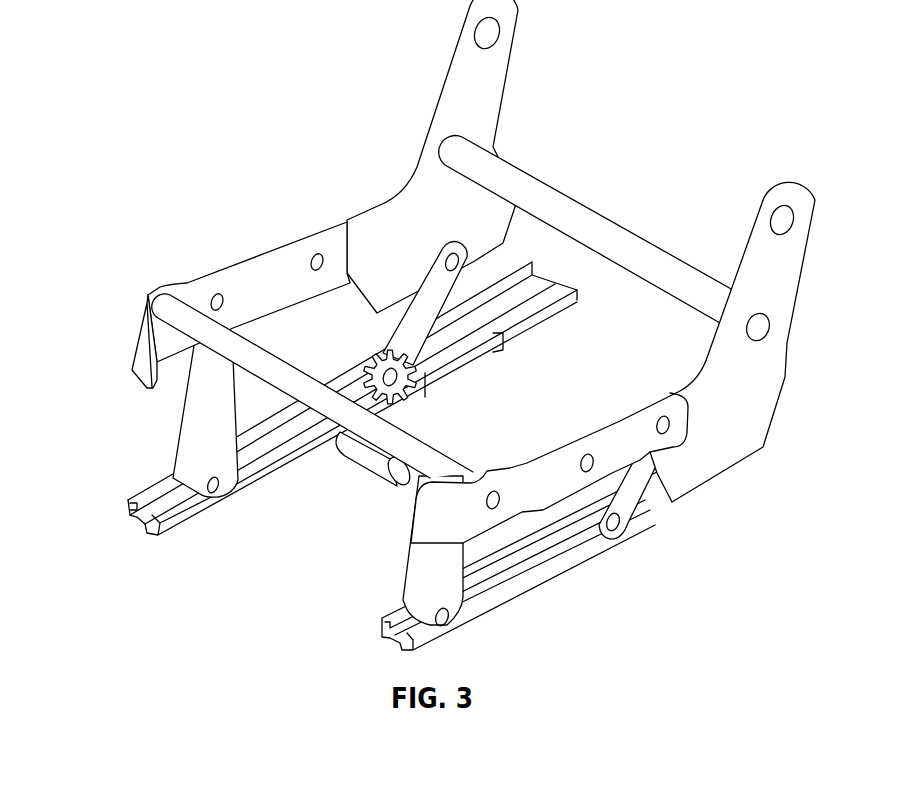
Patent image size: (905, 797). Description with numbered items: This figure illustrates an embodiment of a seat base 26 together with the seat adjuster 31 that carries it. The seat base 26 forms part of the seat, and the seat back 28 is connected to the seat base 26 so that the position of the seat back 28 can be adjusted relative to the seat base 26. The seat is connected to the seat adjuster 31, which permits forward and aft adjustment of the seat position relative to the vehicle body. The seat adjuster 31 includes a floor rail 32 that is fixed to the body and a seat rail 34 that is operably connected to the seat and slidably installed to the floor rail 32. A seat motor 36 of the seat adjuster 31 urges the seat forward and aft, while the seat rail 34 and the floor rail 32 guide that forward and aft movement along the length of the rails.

The seat base 26 is at (263, 274).
The seat back 28 is at (787, 267).
The seat adjuster 31 is at (116, 457).
The floor rail 32 is at (540, 322).
The seat rail 34 is at (177, 515).
The seat motor 36 is at (367, 457).